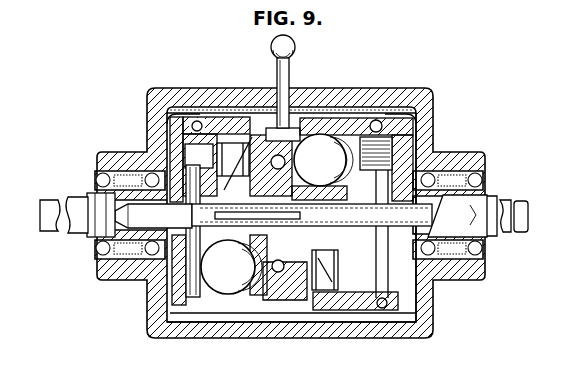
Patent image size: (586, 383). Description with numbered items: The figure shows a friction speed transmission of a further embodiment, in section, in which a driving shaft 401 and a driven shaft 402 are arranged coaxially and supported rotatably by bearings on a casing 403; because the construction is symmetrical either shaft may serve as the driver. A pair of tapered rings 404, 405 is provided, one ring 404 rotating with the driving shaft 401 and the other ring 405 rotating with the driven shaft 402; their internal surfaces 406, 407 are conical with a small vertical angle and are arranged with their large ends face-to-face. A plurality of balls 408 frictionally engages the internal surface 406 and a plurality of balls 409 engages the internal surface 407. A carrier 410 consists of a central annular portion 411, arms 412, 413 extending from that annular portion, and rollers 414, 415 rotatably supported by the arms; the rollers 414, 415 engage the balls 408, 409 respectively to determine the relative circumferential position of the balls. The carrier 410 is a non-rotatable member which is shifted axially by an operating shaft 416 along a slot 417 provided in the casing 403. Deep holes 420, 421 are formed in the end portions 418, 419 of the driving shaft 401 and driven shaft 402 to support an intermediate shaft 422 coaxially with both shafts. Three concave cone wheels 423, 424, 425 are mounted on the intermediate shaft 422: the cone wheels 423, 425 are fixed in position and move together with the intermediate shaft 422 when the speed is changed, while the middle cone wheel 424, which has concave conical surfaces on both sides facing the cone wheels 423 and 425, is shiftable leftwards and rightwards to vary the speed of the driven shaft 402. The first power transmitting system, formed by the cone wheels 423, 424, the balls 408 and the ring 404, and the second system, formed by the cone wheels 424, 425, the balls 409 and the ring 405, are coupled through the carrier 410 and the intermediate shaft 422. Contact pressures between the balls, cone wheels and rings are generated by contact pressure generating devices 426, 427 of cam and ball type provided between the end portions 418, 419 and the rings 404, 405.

The driving shaft 401 is at (74, 193).
The driven shaft 402 is at (498, 200).
The casing 403 is at (433, 98).
The tapered ring 404 is at (214, 118).
The tapered ring 405 is at (352, 118).
The internal surface 406 is at (264, 128).
The internal surface 407 is at (380, 120).
The balls 408 is at (241, 267).
The balls 409 is at (333, 160).
The carrier 410 is at (272, 300).
The central annular portion 411 is at (286, 141).
The arm 412 is at (165, 167).
The arm 413 is at (338, 270).
The roller 414 is at (182, 117).
The roller 415 is at (268, 297).
The operating shaft 416 is at (296, 62).
The slot 417 is at (305, 98).
The end portion 418 is at (213, 155).
The end portion 419 is at (420, 165).
The deep hole 420 is at (108, 213).
The deep hole 421 is at (435, 220).
The intermediate shaft 422 is at (145, 215).
The concave cone wheel 423 is at (199, 156).
The middle cone wheel 424 is at (238, 176).
The concave cone wheel 425 is at (350, 190).
The contact pressure generating device 426 is at (198, 118).
The contact pressure generating device 427 is at (411, 108).